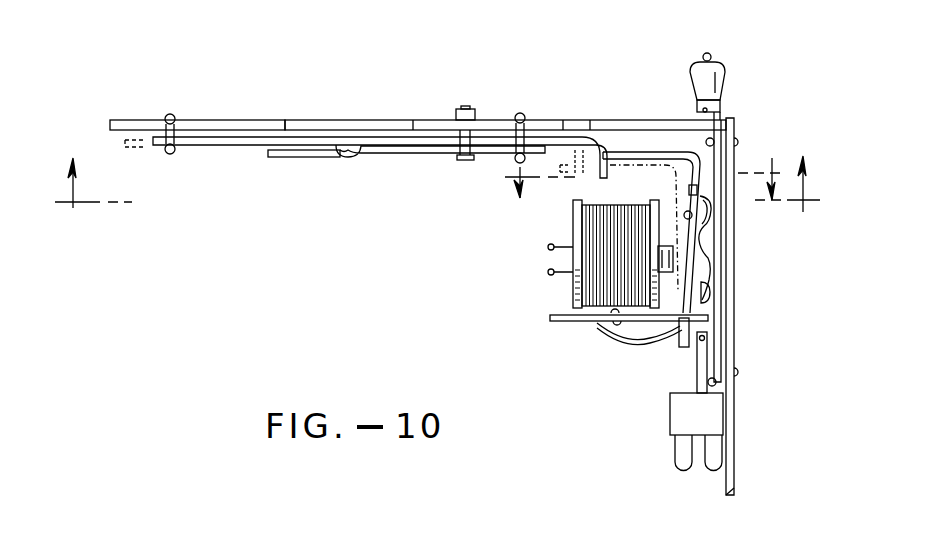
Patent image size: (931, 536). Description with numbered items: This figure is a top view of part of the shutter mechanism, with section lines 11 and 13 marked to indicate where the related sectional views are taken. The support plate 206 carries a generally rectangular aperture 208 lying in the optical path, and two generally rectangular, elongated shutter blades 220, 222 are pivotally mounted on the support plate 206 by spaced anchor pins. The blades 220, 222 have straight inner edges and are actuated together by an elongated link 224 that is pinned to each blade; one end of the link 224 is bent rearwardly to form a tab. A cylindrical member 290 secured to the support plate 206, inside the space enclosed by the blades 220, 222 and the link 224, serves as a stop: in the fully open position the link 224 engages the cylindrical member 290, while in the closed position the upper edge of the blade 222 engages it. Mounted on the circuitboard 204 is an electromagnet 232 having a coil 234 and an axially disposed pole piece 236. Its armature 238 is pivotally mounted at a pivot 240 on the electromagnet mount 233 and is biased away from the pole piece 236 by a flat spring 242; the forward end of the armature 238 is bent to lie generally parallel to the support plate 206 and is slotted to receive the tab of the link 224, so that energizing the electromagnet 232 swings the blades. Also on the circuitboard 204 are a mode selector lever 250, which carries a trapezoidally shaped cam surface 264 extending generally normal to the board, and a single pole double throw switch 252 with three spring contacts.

The section line 11- 11 is at (437, 173).
The section line 13- 13 is at (651, 191).
The circuitboard 204 is at (740, 447).
The support plate 206 is at (221, 120).
The aperture 208 is at (287, 120).
The shutter blade 220 is at (213, 144).
The shutter blade 222 is at (372, 156).
The link 224 is at (337, 151).
The cylindrical member 290 is at (458, 135).
The electromagnet 232 is at (563, 289).
The electromagnet mount 233 is at (552, 322).
The coil 234 is at (612, 296).
The pole piece 236 is at (673, 251).
The armature 238 is at (695, 233).
The armature pivot 240 is at (676, 338).
The flat spring 242 is at (633, 333).
The mode selector lever 250 is at (725, 319).
The single pole double throw switch 252 is at (708, 413).
The cam surface 264 is at (707, 201).